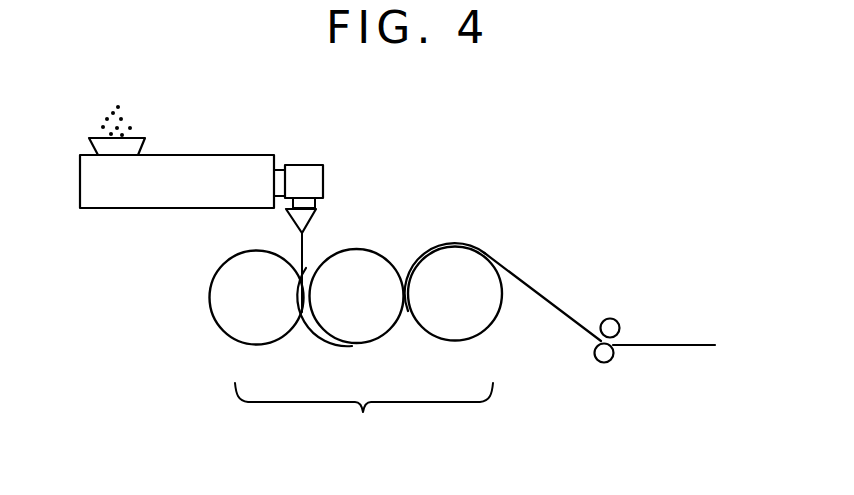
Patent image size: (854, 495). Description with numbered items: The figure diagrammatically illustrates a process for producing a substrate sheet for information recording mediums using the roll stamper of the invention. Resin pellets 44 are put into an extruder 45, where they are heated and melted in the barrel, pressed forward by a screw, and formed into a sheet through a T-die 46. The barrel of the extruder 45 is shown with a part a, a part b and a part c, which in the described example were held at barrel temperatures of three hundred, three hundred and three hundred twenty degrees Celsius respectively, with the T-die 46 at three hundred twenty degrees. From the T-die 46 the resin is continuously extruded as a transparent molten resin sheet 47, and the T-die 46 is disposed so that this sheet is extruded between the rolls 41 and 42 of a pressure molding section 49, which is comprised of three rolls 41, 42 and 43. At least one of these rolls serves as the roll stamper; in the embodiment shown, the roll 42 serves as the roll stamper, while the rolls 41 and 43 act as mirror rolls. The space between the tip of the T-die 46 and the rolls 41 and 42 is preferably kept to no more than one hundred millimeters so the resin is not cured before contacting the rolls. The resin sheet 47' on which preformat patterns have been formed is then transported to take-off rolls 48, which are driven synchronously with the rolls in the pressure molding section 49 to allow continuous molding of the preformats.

The roll 41 is at (260, 333).
The roll 42 is at (365, 327).
The roll 43 is at (460, 330).
The resin pellets 44 is at (135, 139).
The extruder 45 is at (127, 200).
The T-die 46 is at (308, 222).
The molten resin sheet 47 is at (390, 277).
The resin sheet 47' is at (544, 297).
The take-off rolls 48 is at (618, 322).
The pressure molding section 49 is at (364, 417).
The part a of the extruder a is at (92, 200).
The part b of the extruder b is at (167, 200).
The part c of the extruder c is at (250, 166).